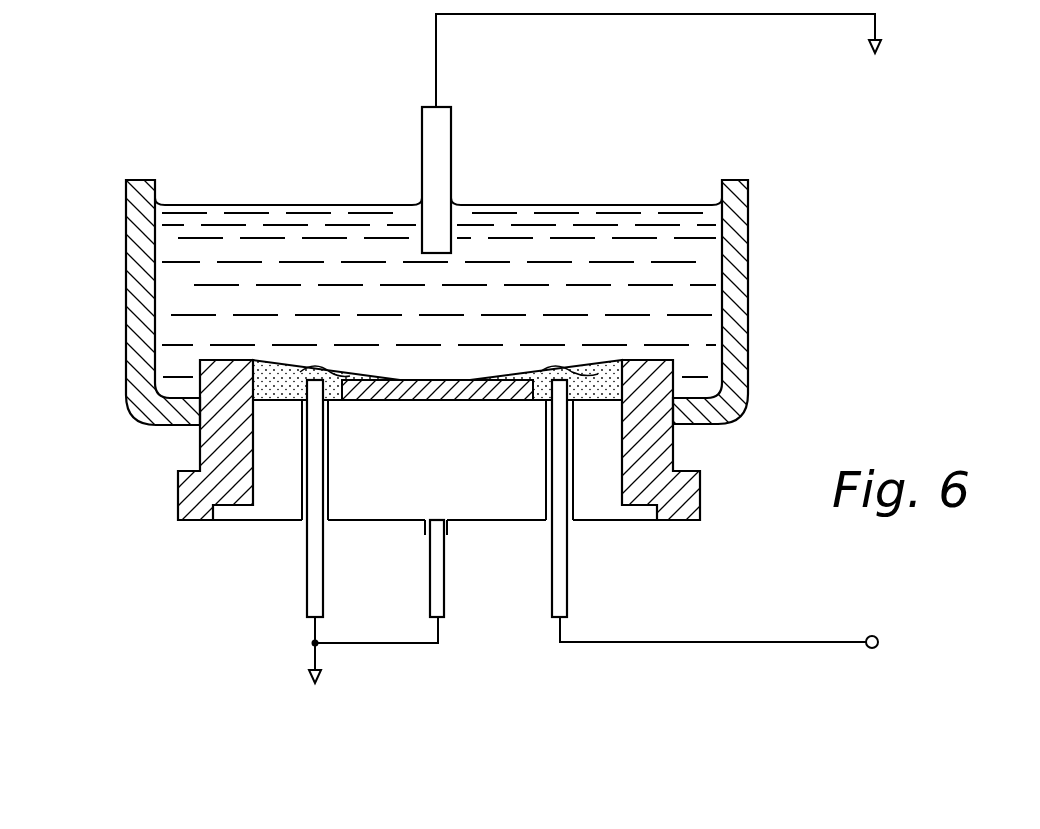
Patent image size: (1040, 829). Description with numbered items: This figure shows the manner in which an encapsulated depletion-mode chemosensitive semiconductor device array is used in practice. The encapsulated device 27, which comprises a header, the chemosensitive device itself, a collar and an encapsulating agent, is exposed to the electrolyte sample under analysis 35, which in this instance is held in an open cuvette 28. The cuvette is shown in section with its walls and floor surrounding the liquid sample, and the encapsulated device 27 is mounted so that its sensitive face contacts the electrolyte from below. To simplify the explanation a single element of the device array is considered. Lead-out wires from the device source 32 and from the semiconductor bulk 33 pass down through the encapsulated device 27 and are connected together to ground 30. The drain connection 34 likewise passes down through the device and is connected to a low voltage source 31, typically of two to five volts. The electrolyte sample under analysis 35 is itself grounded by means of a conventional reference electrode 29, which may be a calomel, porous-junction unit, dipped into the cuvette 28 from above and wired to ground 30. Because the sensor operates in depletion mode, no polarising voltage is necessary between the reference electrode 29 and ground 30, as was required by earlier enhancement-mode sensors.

The encapsulated device 27 is at (413, 475).
The open cuvette 28 is at (742, 277).
The reference electrode 29 is at (440, 125).
The ground 30 is at (595, 378).
The low voltage source 31 is at (890, 656).
The device source 32 is at (306, 570).
The semiconductor bulk 33 is at (428, 570).
The drain connection 34 is at (552, 565).
The electrolyte sample under analysis 35 is at (281, 230).